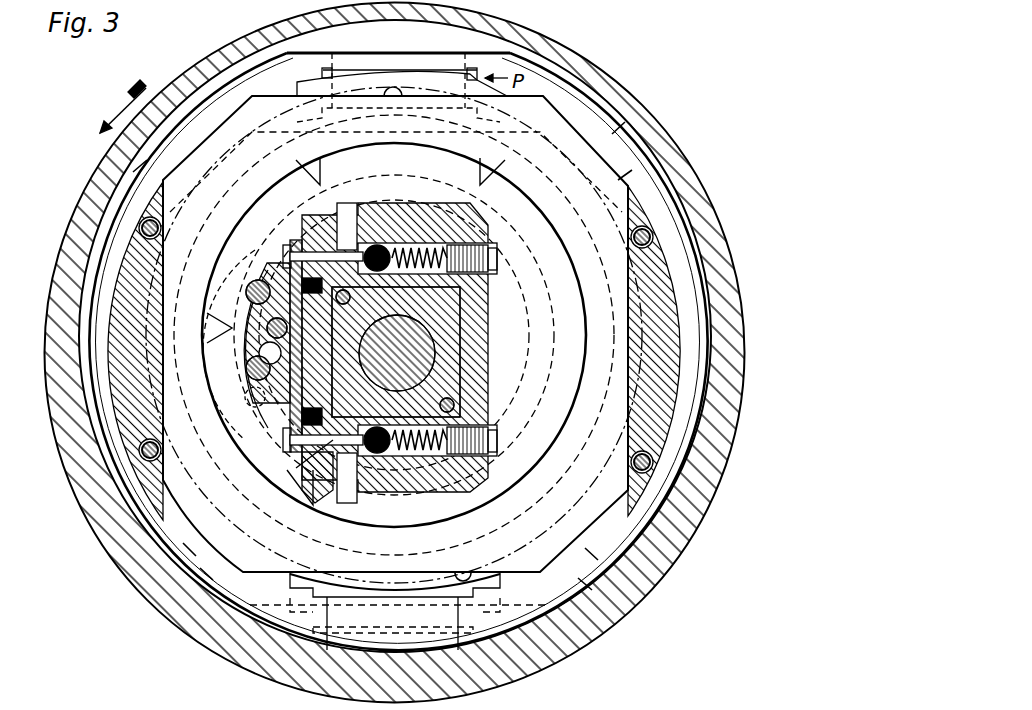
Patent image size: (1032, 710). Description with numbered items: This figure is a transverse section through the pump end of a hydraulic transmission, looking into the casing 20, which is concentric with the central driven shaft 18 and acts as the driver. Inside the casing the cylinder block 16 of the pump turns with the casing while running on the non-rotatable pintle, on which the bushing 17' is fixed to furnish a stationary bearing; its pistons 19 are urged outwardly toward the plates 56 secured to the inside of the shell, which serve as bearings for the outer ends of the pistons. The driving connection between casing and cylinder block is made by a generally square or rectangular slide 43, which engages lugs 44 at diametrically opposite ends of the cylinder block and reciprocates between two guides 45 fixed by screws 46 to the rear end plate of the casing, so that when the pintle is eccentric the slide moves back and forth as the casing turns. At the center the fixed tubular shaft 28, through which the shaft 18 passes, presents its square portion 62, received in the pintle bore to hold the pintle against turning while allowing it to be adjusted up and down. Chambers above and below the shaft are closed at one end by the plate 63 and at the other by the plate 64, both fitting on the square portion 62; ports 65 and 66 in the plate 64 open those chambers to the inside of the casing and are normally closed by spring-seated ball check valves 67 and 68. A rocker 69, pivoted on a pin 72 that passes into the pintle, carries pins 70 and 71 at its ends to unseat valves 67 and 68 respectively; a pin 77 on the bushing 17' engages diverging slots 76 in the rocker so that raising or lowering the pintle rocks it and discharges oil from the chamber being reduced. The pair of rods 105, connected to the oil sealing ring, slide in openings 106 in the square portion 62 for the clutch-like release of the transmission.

The cylinder block 16 is at (322, 73).
The bushing 17' is at (590, 347).
The central shaft 18 is at (430, 334).
The pistons 19 is at (460, 70).
The casing 20 is at (690, 522).
The tubular shaft 28 is at (462, 357).
The slide 43 is at (395, 373).
The lugs 44 is at (396, 103).
The guides 45 is at (138, 292).
The screws 46 is at (633, 236).
The plates 56 is at (400, 51).
The square portion 62 is at (300, 372).
The plate 63 is at (598, 628).
The plate 64 is at (462, 432).
The port 65 is at (368, 228).
The port 66 is at (347, 493).
The ball check valve 67 is at (346, 226).
The ball check valve 68 is at (346, 478).
The rocker 69 is at (243, 310).
The pin 70 is at (294, 337).
The pin 71 is at (300, 472).
The pin 72 is at (256, 348).
The diverging slots 76 is at (264, 252).
The pin 77 is at (247, 291).
The rods 105 is at (352, 301).
The openings 106 is at (455, 405).